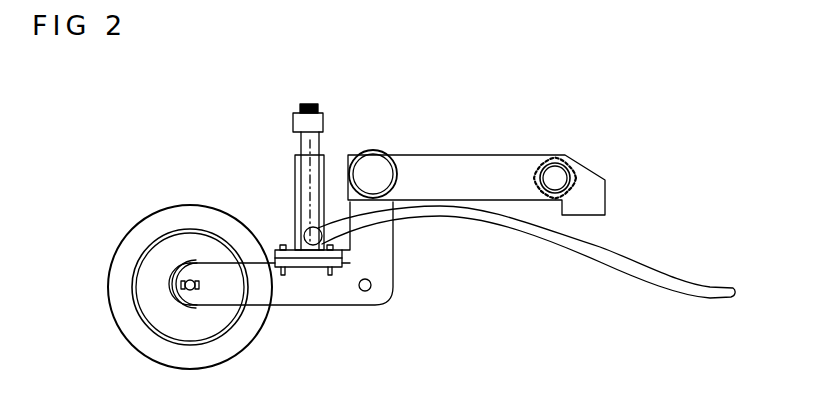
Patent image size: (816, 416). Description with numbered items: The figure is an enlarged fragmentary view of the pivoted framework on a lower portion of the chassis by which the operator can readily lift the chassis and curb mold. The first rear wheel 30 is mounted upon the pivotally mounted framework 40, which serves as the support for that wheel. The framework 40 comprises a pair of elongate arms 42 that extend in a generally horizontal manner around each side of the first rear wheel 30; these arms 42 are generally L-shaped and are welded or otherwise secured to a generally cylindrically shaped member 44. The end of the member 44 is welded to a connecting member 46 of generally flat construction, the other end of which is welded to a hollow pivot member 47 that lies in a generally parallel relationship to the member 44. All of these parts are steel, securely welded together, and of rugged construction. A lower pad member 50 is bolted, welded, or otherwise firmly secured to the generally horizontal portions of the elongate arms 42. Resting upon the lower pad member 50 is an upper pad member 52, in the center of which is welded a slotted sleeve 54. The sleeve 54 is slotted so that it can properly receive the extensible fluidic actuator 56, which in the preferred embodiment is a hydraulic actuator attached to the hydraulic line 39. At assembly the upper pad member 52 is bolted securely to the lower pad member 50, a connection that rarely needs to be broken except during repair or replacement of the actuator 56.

The first rear wheel 30 is at (181, 360).
The hydraulic line 39 is at (662, 290).
The pivotally mounted framework 40 is at (382, 270).
The elongate arms 42 is at (340, 305).
The cylindrically shaped member 44 is at (373, 150).
The connecting member 46 is at (467, 165).
The hollow pivot member 47 is at (578, 168).
The lower pad member 50 is at (317, 272).
The upper pad member 52 is at (283, 247).
The slotted sleeve 54 is at (296, 163).
The extensible fluidic actuator 56 is at (303, 145).